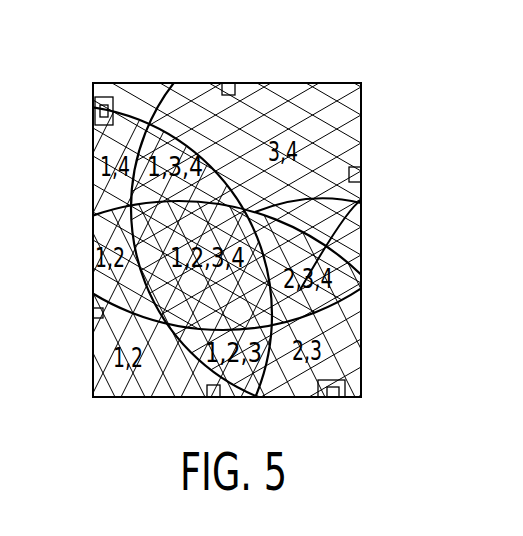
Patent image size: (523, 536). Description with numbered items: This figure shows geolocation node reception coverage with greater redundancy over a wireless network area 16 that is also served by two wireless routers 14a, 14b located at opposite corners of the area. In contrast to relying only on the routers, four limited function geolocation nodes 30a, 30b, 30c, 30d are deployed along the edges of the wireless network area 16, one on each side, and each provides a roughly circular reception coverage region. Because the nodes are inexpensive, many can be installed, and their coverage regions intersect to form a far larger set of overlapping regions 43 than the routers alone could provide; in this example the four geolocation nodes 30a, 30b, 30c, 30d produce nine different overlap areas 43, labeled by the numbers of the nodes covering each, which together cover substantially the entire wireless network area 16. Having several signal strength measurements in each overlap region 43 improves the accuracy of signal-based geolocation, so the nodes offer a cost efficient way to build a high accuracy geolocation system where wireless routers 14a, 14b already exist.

The wireless network area 16 is at (323, 54).
The wireless router 14a is at (331, 399).
The wireless router 14b is at (95, 112).
The geolocation node 30a is at (93, 315).
The geolocation node 30b is at (209, 399).
The geolocation node 30c is at (362, 174).
The geolocation node 30d is at (229, 83).
The overlapping regions 43 is at (343, 217).